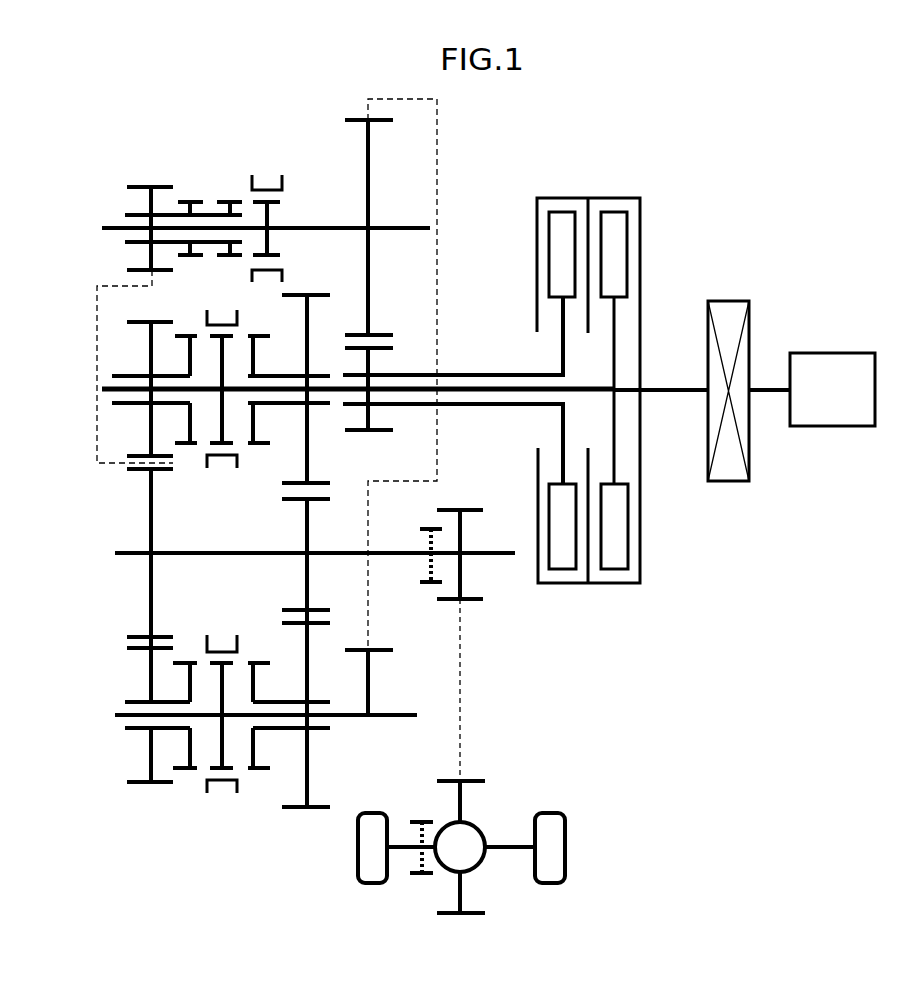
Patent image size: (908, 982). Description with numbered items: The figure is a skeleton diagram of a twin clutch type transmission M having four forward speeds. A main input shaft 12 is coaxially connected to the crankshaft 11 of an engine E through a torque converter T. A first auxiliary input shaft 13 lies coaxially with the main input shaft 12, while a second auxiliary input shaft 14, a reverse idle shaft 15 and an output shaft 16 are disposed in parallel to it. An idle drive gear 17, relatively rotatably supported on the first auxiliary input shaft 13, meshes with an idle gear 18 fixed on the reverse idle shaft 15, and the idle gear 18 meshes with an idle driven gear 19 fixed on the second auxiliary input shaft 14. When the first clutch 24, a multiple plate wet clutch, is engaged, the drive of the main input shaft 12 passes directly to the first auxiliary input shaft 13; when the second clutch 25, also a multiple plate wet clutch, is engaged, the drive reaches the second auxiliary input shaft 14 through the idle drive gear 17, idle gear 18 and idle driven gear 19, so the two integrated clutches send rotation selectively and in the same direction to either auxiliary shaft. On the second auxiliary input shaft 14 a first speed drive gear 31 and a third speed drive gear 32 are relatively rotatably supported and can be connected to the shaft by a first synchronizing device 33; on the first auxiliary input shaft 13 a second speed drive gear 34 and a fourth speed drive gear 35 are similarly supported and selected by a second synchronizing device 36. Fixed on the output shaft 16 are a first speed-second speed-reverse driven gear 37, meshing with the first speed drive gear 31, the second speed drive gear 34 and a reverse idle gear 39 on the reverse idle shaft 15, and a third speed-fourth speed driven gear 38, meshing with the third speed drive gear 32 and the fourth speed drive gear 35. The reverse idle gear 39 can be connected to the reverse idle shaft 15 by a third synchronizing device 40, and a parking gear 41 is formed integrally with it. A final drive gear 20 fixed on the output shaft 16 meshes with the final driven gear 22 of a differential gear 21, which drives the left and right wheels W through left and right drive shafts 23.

The crankshaft 11 is at (762, 388).
The main input shaft 12 is at (655, 388).
The first auxiliary input shaft 13 is at (460, 388).
The second auxiliary input shaft 14 is at (387, 713).
The reverse idle shaft 15 is at (390, 228).
The output shaft 16 is at (387, 552).
The idle drive gear 17 is at (393, 346).
The idle gear 18 is at (353, 119).
The idle driven gear 19 is at (380, 648).
The final drive gear 20 is at (468, 508).
The differential gear 21 is at (473, 833).
The final driven gear 22 is at (475, 779).
The drive shaft 23 is at (395, 845).
The first clutch 24 is at (616, 206).
The second clutch 25 is at (564, 206).
The first speed drive gear 31 is at (168, 648).
The third speed drive gear 32 is at (322, 623).
The first synchronizing device 33 is at (215, 636).
The second speed drive gear 34 is at (142, 322).
The fourth speed drive gear 35 is at (292, 294).
The second synchronizing device 36 is at (225, 311).
The first speed-second speed-reverse driven gear 37 is at (167, 468).
The third speed-fourth speed driven gear 38 is at (323, 495).
The reverse idle gear 39 is at (143, 186).
The third synchronizing device 40 is at (258, 183).
The parking gear 41 is at (187, 200).
The transmission M is at (88, 205).
The torque converter T is at (724, 307).
The engine E is at (832, 389).
The wheel W is at (362, 830).